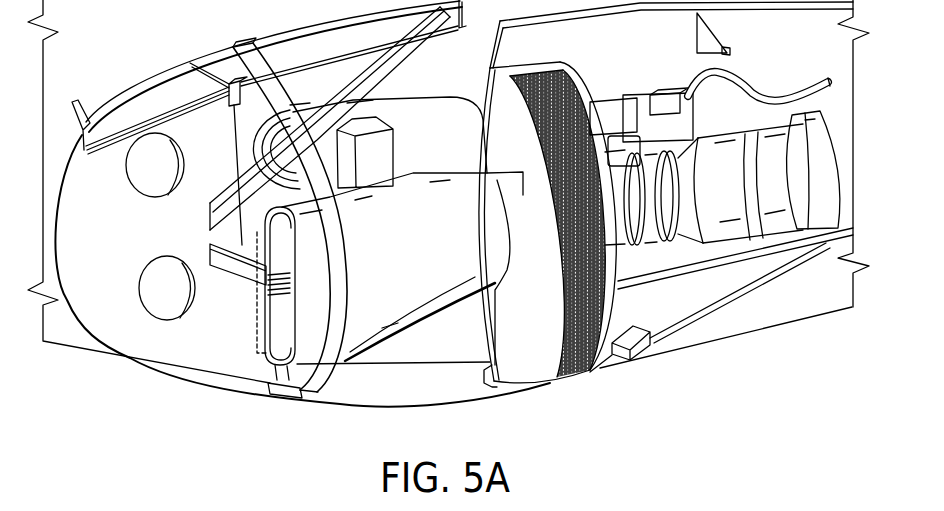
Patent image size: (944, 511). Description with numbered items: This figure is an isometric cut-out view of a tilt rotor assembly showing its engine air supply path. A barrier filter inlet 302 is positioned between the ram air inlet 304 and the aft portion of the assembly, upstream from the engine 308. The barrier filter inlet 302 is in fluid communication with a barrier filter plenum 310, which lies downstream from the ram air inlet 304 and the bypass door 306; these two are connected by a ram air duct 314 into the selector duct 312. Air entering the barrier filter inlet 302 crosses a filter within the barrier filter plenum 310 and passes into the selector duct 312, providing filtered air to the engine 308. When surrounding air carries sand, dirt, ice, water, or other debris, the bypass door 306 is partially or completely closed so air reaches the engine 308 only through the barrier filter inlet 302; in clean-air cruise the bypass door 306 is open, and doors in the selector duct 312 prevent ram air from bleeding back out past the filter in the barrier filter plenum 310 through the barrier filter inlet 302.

The barrier filter inlet 302 is at (560, 77).
The ram air inlet 304 is at (259, 317).
The bypass door 306 is at (280, 258).
The engine 308 is at (758, 127).
The barrier filter plenum 310 is at (519, 330).
The selector duct 312 is at (507, 163).
The ram air duct 314 is at (396, 303).